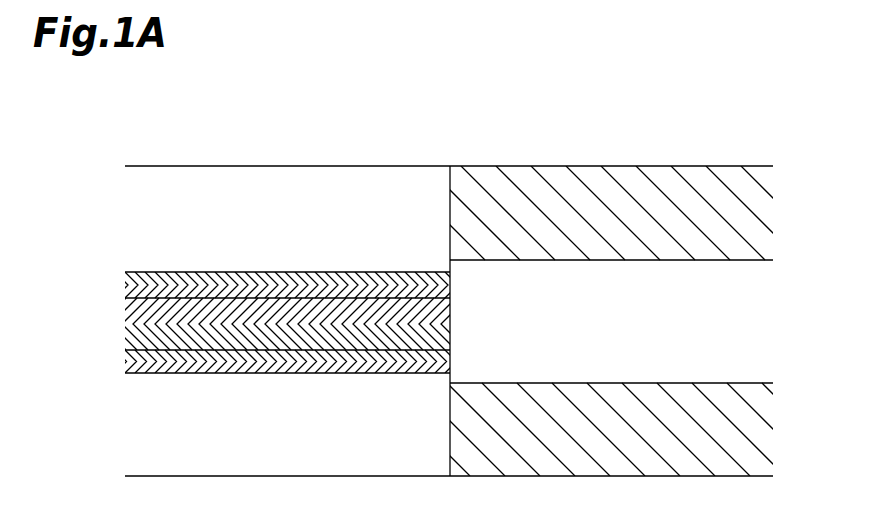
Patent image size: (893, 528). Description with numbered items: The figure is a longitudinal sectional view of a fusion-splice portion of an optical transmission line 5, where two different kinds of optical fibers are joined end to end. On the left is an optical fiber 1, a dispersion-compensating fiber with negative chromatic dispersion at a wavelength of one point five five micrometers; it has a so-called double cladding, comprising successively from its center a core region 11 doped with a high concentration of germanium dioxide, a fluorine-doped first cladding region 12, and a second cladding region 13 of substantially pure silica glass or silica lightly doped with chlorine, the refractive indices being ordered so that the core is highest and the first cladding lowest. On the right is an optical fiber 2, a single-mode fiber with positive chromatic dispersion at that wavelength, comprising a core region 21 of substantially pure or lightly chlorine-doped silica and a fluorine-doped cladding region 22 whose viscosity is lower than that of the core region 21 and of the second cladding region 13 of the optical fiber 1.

The optical fiber 1 is at (259, 166).
The optical fiber 2 is at (592, 166).
The optical transmission line 5 is at (458, 120).
The core region 11 is at (160, 331).
The first cladding region 12 is at (150, 288).
The second cladding region 13 is at (166, 216).
The core region 21 is at (755, 320).
The cladding region 22 is at (755, 203).